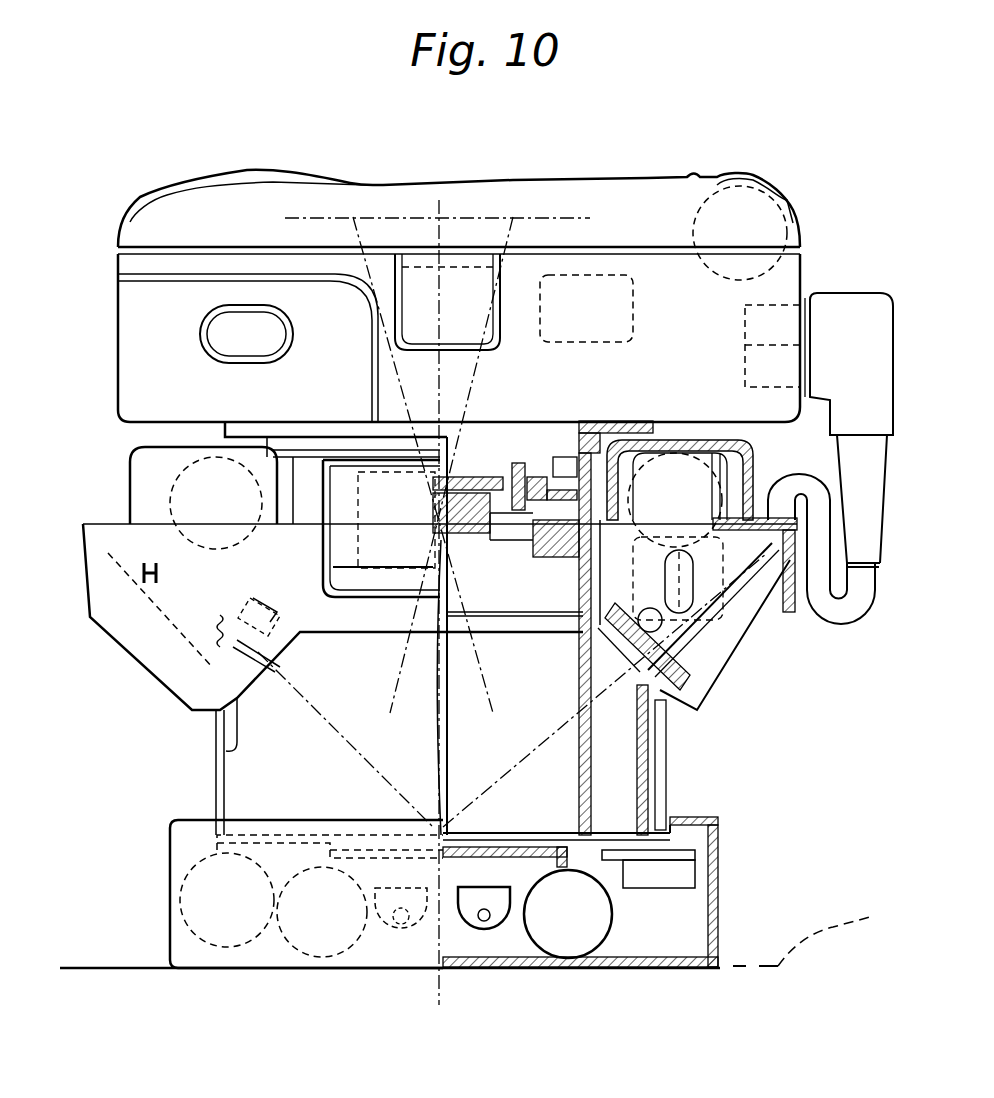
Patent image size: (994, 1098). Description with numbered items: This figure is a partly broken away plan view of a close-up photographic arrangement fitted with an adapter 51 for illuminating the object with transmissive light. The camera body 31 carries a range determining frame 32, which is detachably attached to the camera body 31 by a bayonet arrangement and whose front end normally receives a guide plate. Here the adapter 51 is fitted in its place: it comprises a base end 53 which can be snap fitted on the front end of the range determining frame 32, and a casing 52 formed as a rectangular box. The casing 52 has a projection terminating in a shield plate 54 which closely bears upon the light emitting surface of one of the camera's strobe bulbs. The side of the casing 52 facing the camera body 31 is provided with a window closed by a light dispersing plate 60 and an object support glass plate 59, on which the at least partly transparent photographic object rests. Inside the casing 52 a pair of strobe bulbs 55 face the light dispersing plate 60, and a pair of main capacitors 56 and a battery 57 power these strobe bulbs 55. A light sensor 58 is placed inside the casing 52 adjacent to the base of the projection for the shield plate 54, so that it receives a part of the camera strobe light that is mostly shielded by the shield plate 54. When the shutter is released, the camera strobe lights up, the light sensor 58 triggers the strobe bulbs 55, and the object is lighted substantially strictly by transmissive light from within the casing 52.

The camera body 31 is at (787, 207).
The range determining frame 32 is at (760, 690).
The adapter 51 is at (731, 878).
The casing 52 is at (718, 845).
The base end 53 is at (670, 762).
The shield plate 54 is at (580, 675).
The strobe bulbs 55 is at (490, 932).
The main capacitors 56 is at (573, 948).
The battery 57 is at (228, 935).
The light sensor 58 is at (612, 858).
The object support glass plate 59 is at (560, 835).
The light dispersing plate 60 is at (515, 858).